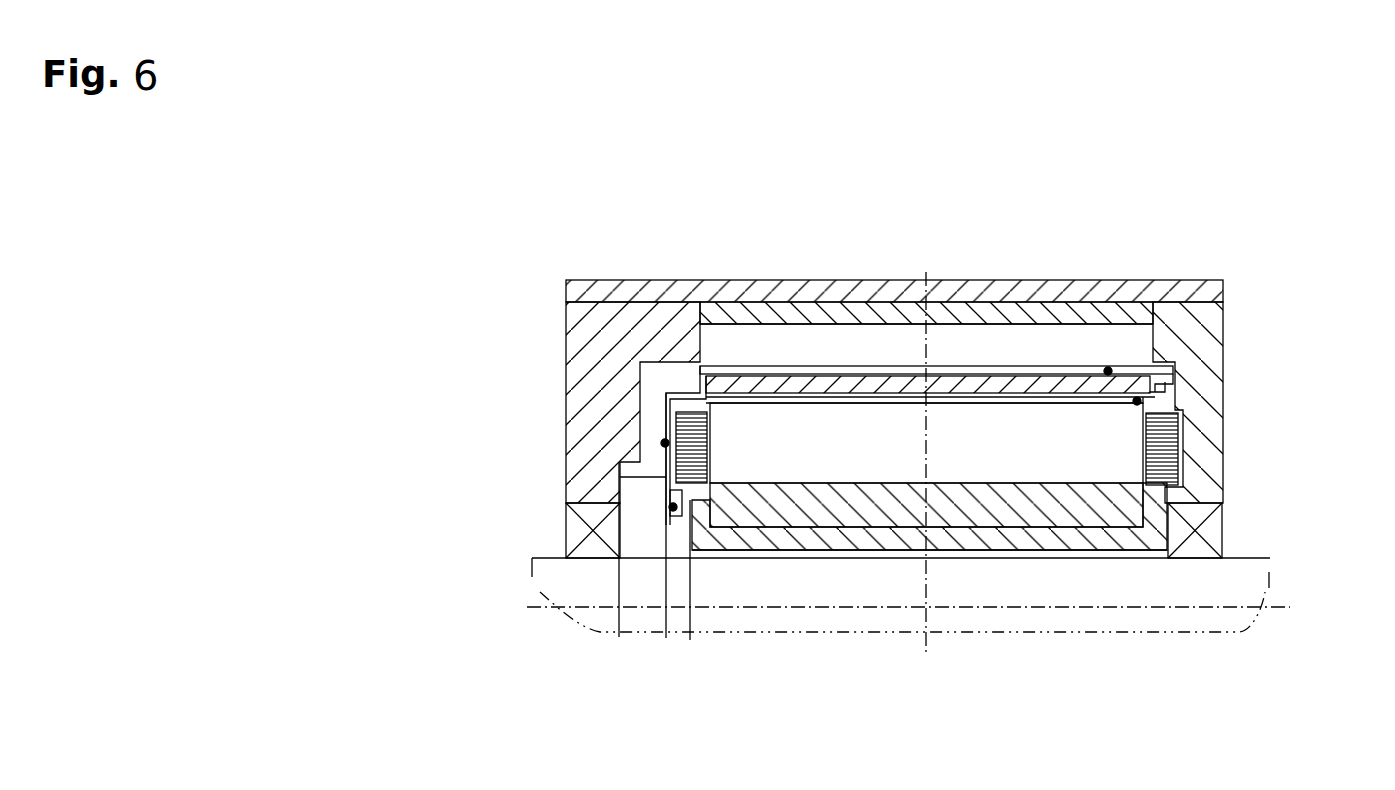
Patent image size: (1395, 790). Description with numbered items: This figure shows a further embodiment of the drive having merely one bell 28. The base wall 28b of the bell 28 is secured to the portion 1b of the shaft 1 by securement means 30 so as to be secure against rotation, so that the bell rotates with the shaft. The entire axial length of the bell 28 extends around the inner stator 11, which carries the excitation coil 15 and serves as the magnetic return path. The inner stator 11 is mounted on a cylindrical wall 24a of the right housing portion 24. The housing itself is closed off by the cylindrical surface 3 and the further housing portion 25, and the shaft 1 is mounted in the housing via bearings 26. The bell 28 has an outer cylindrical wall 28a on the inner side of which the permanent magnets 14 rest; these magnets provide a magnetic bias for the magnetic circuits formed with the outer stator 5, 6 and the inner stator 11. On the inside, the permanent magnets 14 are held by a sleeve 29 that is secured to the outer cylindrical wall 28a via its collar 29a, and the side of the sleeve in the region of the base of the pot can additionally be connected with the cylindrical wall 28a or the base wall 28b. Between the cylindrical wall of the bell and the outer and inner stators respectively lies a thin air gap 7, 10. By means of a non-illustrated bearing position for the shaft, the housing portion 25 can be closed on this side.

The shaft 1 is at (575, 585).
The portion of the shaft 1b is at (647, 545).
The cylindrical surface 3 is at (694, 290).
The outer stator 5 is at (855, 350).
The outer stator 6 is at (810, 290).
The air gap 7 is at (897, 368).
The air gap 10 is at (768, 403).
The inner stator 11 is at (836, 455).
The permanent magnets 14 is at (968, 385).
The excitation coil 15 is at (1165, 432).
The right housing portion 24 is at (1207, 450).
The cylindrical wall 24a is at (1032, 540).
The further housing portion 25 is at (607, 338).
The bearings 26 is at (583, 533).
The bell 28 is at (1043, 362).
The outer cylindrical wall 28a is at (1108, 371).
The base wall 28b is at (665, 443).
The sleeve 29 is at (1137, 401).
The collar 29a is at (1175, 382).
The securement means 30 is at (673, 507).